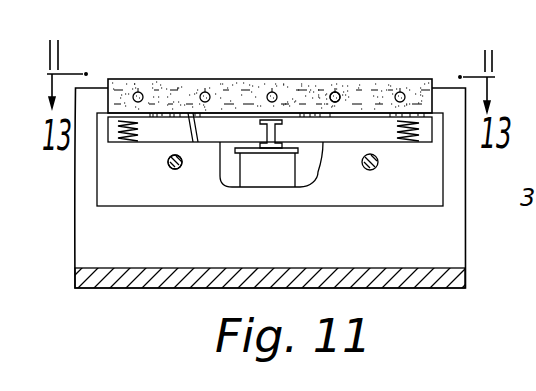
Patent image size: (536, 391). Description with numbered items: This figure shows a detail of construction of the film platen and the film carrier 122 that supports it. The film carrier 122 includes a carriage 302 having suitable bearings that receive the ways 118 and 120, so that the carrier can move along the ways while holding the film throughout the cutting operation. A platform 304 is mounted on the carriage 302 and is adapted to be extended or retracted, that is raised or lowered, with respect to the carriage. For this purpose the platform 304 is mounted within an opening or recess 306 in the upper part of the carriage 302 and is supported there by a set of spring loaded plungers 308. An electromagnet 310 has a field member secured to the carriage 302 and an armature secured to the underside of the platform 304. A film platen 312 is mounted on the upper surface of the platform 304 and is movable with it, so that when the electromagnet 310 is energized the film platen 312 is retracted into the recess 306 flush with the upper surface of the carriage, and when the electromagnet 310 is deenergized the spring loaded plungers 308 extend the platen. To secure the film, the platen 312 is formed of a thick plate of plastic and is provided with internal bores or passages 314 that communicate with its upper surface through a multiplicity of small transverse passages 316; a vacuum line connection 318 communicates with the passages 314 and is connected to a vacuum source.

The film carrier 122 is at (97, 78).
The spring loaded plungers 308 is at (130, 127).
The vacuum line connection 318 is at (190, 124).
The small transverse passages 316 is at (273, 88).
The internal bores or passages 314 is at (332, 80).
The film platen 312 is at (404, 49).
The opening or recess 306 is at (112, 128).
The platform 304 is at (343, 112).
The electromagnet 310 is at (279, 174).
The carriage 302 is at (138, 207).
The way 120 is at (175, 169).
The way 118 is at (377, 168).